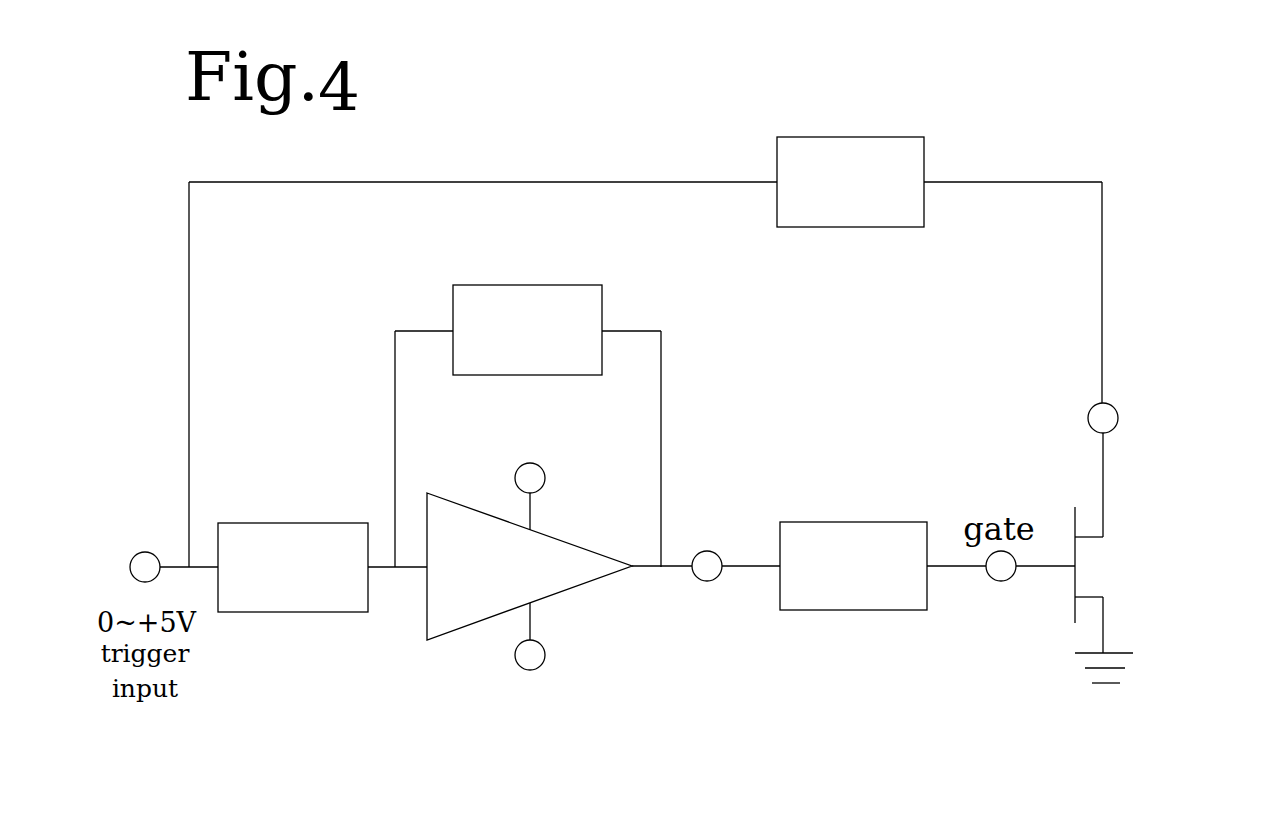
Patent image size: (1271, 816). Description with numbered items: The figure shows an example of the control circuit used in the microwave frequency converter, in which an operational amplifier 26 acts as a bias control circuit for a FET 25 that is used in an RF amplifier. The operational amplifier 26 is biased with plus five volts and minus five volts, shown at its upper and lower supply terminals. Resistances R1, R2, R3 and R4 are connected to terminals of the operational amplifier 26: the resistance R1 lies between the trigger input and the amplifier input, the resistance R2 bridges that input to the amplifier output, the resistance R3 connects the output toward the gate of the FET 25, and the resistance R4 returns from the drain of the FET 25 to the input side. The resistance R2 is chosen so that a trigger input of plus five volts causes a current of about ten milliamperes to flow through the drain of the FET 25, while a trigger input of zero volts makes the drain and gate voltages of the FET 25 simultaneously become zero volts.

The FET 25 is at (1073, 610).
The operational amplifier 26 is at (575, 588).
The resistance R1 is at (293, 567).
The resistance R2 is at (527, 330).
The resistance R3 is at (853, 566).
The resistance R4 is at (850, 182).